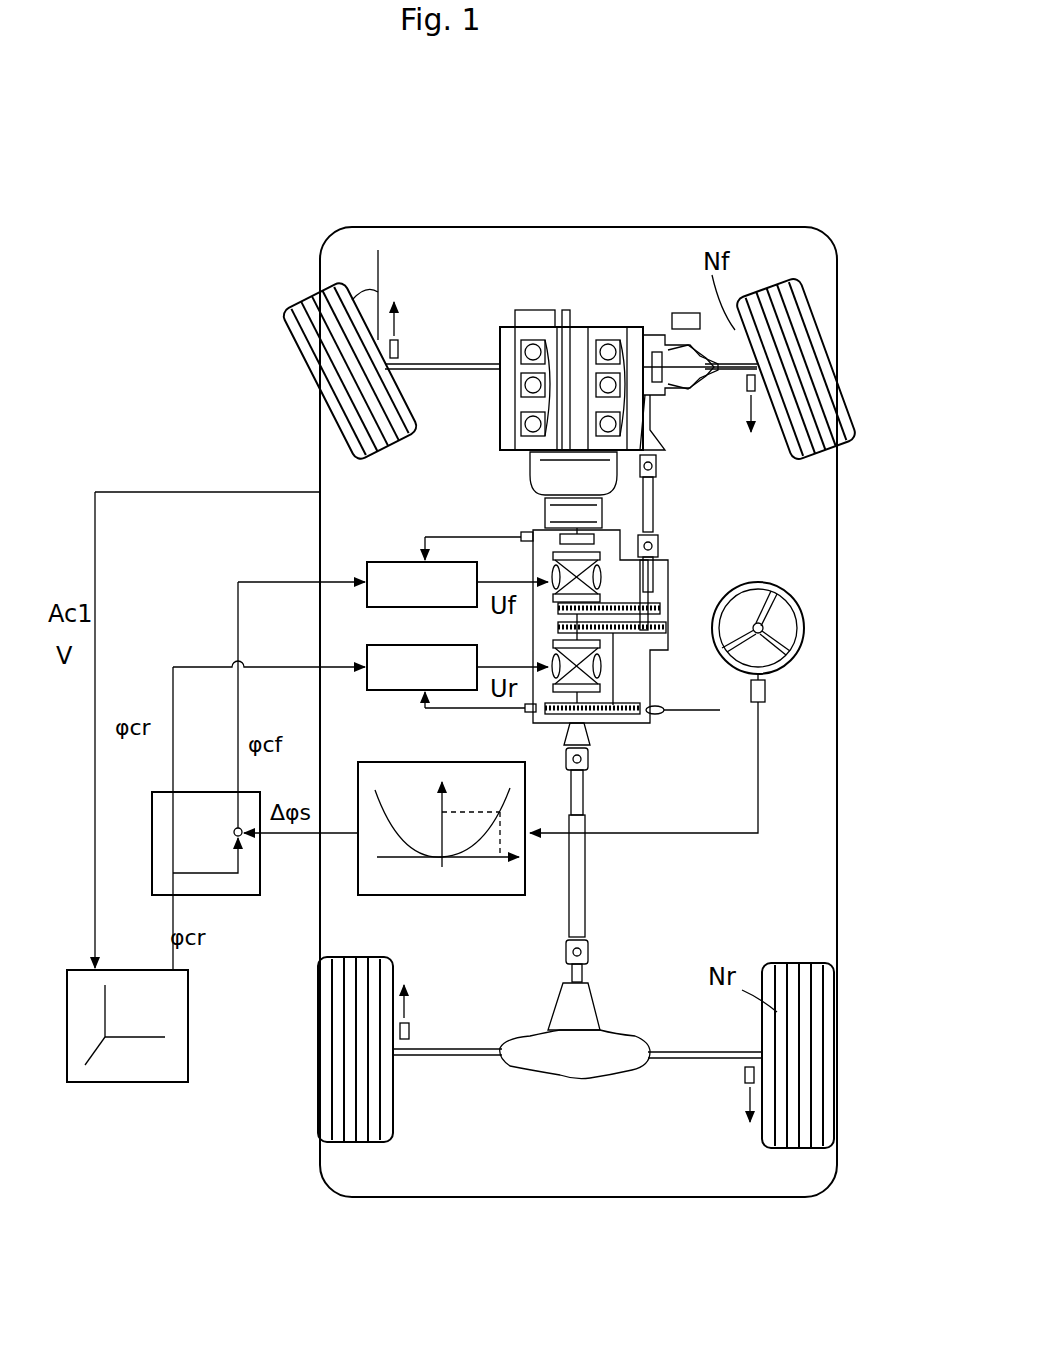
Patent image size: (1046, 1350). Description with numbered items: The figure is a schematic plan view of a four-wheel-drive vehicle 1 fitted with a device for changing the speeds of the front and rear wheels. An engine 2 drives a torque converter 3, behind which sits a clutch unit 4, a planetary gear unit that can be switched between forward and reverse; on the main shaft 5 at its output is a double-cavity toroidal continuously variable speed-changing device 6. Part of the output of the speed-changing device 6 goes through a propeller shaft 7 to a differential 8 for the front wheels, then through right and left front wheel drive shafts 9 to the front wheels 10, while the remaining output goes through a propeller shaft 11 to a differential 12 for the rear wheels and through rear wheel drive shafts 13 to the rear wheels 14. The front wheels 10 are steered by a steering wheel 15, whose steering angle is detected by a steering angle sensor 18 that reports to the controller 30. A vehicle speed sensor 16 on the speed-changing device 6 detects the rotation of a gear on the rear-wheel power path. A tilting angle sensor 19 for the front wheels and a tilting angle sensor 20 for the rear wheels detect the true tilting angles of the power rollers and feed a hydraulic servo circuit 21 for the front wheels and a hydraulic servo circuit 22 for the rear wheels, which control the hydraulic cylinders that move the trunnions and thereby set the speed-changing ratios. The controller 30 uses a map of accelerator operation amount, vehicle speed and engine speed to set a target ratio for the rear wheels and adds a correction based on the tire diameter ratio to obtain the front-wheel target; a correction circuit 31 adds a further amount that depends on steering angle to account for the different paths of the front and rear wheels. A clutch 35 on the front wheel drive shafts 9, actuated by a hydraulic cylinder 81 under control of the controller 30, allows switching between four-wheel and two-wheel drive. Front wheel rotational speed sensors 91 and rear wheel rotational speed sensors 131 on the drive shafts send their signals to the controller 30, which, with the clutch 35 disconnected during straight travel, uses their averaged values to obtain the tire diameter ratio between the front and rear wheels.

The four-wheel-drive vehicle 1 is at (712, 152).
The engine 2 is at (578, 327).
The torque converter 3 is at (540, 478).
The clutch unit 4 is at (548, 515).
The main shaft 5 is at (548, 543).
The continuously variable speed-changing device 6 is at (535, 620).
The propeller shaft for driving the front wheels 7 is at (656, 495).
The differential for the front wheels 8 is at (655, 347).
The front wheel drive shafts 9 is at (438, 363).
The front wheels 10 is at (290, 328).
The propeller shaft for driving the rear wheels 11 is at (583, 881).
The differential for the rear wheels 12 is at (600, 1068).
The rear wheel drive shafts 13 is at (441, 1058).
The rear wheels 14 is at (340, 1104).
The steering wheel 15 is at (795, 605).
The vehicle speed sensor 16 is at (658, 716).
The steering angle sensor 18 is at (768, 692).
The tilting angle sensor for the front wheels 19 is at (525, 533).
The tilting angle sensor for rear wheels 20 is at (530, 713).
The hydraulic servo circuit for the front wheels 21 is at (385, 560).
The hydraulic servo circuit for the rear wheels 22 is at (383, 686).
The controller 30 is at (190, 1010).
The correction circuit 31 is at (465, 897).
The clutch 35 is at (672, 342).
The hydraulic cylinder 81 is at (685, 313).
The front wheel rotational speed sensors 91 is at (398, 350).
The rear wheel rotational speed sensors 131 is at (410, 1031).